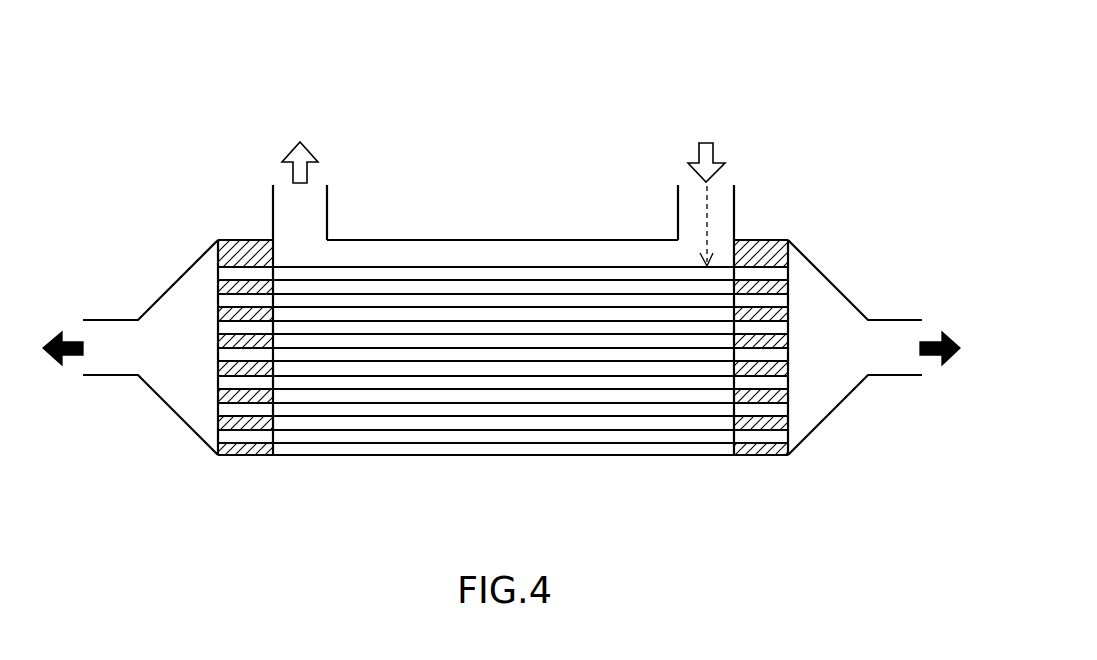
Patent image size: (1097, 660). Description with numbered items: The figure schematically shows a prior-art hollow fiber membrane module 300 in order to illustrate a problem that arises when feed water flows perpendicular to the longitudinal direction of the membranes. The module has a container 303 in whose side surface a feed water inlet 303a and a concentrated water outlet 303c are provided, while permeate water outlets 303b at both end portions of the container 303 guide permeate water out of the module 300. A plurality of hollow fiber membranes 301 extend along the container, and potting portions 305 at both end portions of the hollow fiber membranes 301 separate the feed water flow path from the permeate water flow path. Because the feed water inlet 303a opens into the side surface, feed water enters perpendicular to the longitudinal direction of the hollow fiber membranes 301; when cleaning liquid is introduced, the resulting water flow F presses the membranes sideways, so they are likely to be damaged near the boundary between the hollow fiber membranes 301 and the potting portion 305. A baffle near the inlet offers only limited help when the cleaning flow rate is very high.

The hollow fiber membrane module 300 is at (748, 118).
The hollow fiber membranes 301 is at (485, 266).
The container 303 is at (512, 457).
The feed water inlet 303a is at (735, 202).
The permeate water outlets 303b is at (112, 377).
The concentrated water outlet 303c is at (271, 208).
The potting portions 305 is at (248, 446).
The water flow F is at (703, 210).